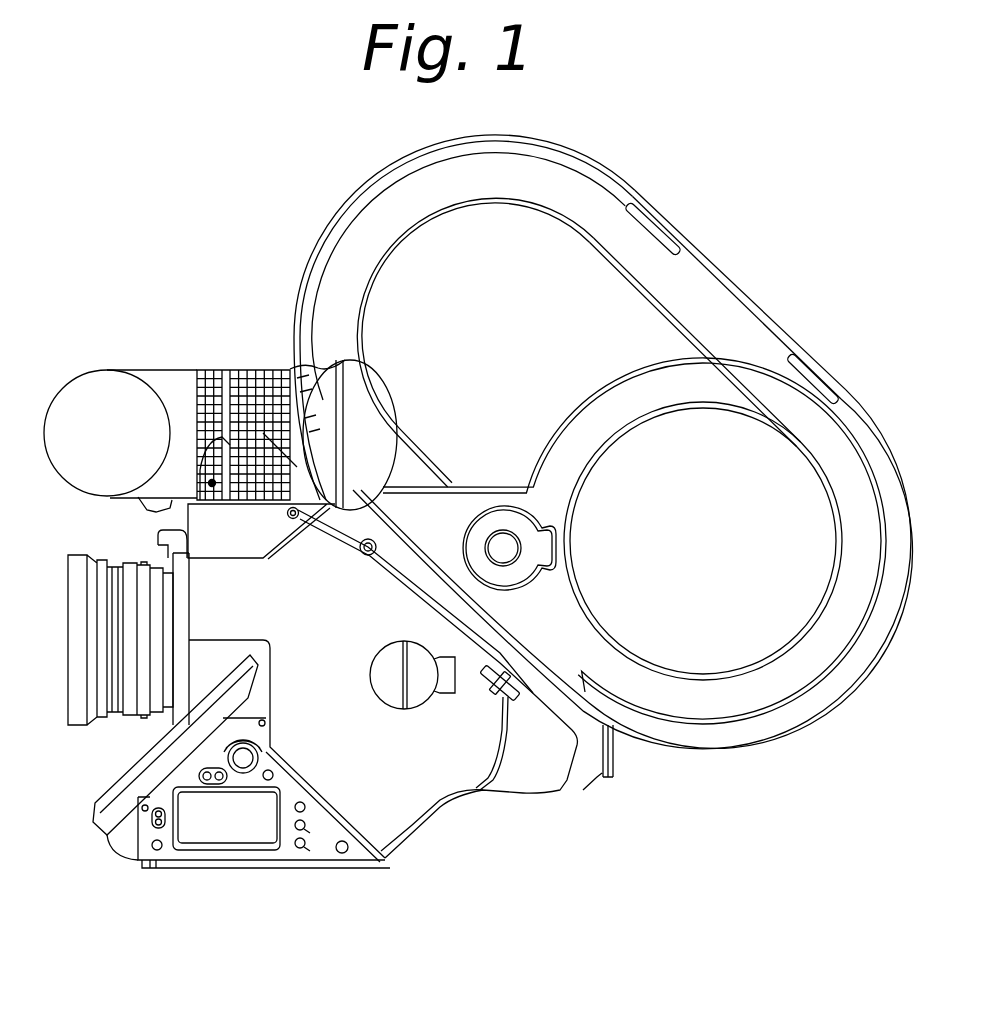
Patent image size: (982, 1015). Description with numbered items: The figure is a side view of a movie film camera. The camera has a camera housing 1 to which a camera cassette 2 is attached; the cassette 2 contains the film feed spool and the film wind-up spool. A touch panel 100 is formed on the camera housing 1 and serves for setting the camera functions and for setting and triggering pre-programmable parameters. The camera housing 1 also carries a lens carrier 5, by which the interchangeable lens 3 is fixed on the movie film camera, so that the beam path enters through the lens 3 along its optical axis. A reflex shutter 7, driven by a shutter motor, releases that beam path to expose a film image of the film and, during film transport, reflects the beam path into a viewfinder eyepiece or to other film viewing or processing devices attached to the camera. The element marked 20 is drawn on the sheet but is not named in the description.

The camera housing 1 is at (397, 798).
The camera cassette 2 is at (677, 262).
The interchangeable lens 3 is at (92, 680).
The lens carrier 5 is at (158, 532).
The reflex shutter 7 is at (123, 828).
The eyepiece 20 is at (98, 393).
The touch panel 100 is at (247, 827).